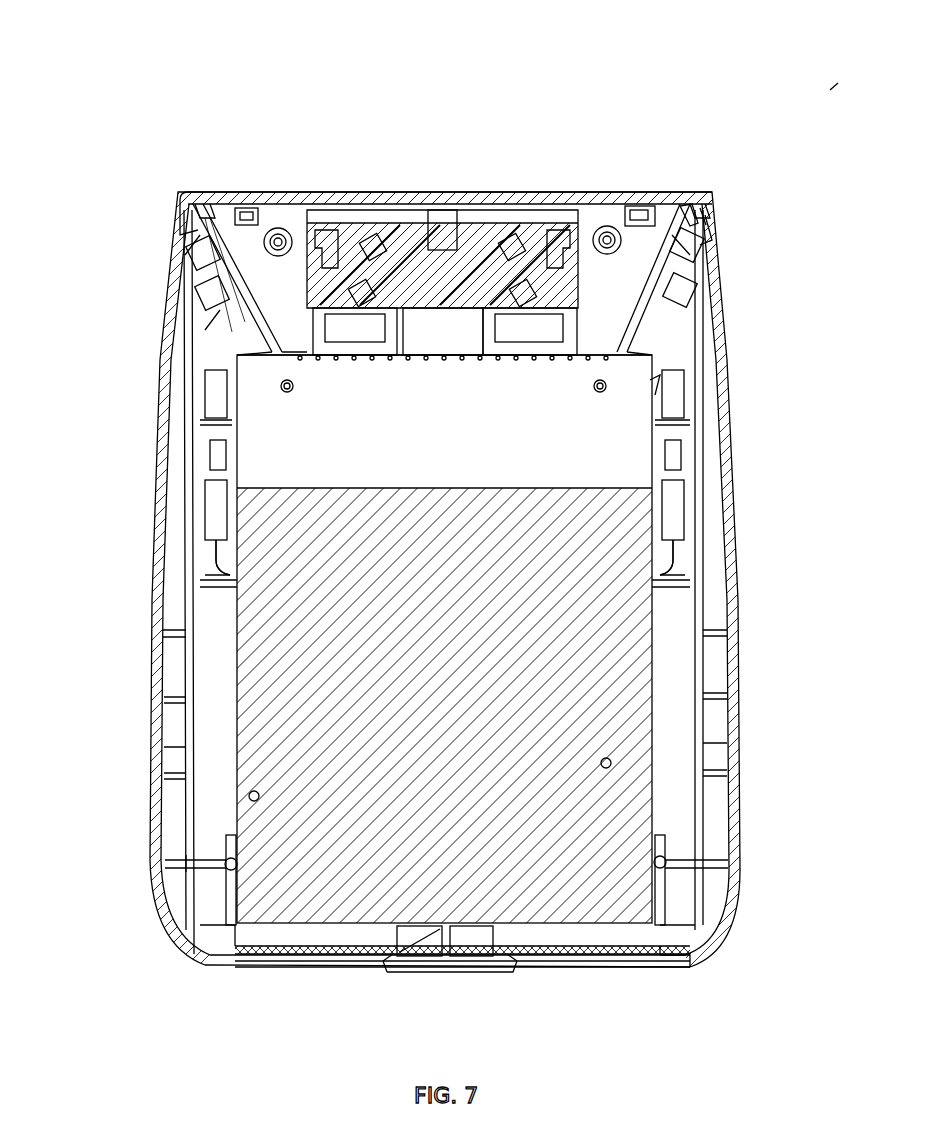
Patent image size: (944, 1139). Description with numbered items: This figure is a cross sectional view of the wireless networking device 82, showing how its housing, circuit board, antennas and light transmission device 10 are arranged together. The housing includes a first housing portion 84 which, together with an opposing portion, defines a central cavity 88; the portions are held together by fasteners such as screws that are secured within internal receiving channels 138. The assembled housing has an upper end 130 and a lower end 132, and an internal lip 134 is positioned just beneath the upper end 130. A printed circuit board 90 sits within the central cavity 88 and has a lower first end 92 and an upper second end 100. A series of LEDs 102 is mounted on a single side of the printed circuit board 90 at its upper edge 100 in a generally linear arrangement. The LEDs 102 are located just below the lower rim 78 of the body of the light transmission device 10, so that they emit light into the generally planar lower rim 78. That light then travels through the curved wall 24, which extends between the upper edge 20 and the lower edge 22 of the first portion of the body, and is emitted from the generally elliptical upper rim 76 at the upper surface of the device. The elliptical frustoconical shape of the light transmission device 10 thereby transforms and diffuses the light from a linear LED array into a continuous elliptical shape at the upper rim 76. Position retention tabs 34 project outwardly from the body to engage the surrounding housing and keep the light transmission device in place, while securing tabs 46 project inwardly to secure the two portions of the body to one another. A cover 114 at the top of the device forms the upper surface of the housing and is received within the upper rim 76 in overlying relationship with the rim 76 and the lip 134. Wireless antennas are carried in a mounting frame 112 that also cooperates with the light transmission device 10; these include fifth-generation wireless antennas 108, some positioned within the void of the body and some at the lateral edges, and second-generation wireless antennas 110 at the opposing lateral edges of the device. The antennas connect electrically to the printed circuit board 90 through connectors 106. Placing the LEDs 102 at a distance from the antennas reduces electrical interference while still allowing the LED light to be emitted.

The wireless networking device 82 is at (844, 76).
The first housing portion 84 is at (152, 668).
The central cavity 88 is at (200, 832).
The internal receiving channels 138 is at (225, 866).
The first end of the printed circuit board 92 is at (305, 912).
The lower end 132 is at (662, 966).
The printed circuit board 90 is at (342, 462).
The upper edge 20 is at (185, 200).
The upper end 130 is at (185, 200).
The internal lip 134 is at (190, 207).
The wall 24 is at (685, 205).
The upper rim 76 is at (712, 200).
The position retention tabs 34 is at (714, 222).
The light transmission device 10 is at (215, 332).
The 5G wireless antennas 108 is at (200, 250).
The securing tab 46 is at (278, 230).
The cover 114 is at (442, 210).
The mounting frame 112 is at (535, 235).
The lower edge 22 is at (528, 358).
The LEDs 102 is at (512, 362).
The lower rim 78 is at (278, 386).
The second end of the printed circuit board 100 is at (702, 388).
The 2G wireless antennas 110 is at (222, 460).
The connectors 106 is at (225, 565).